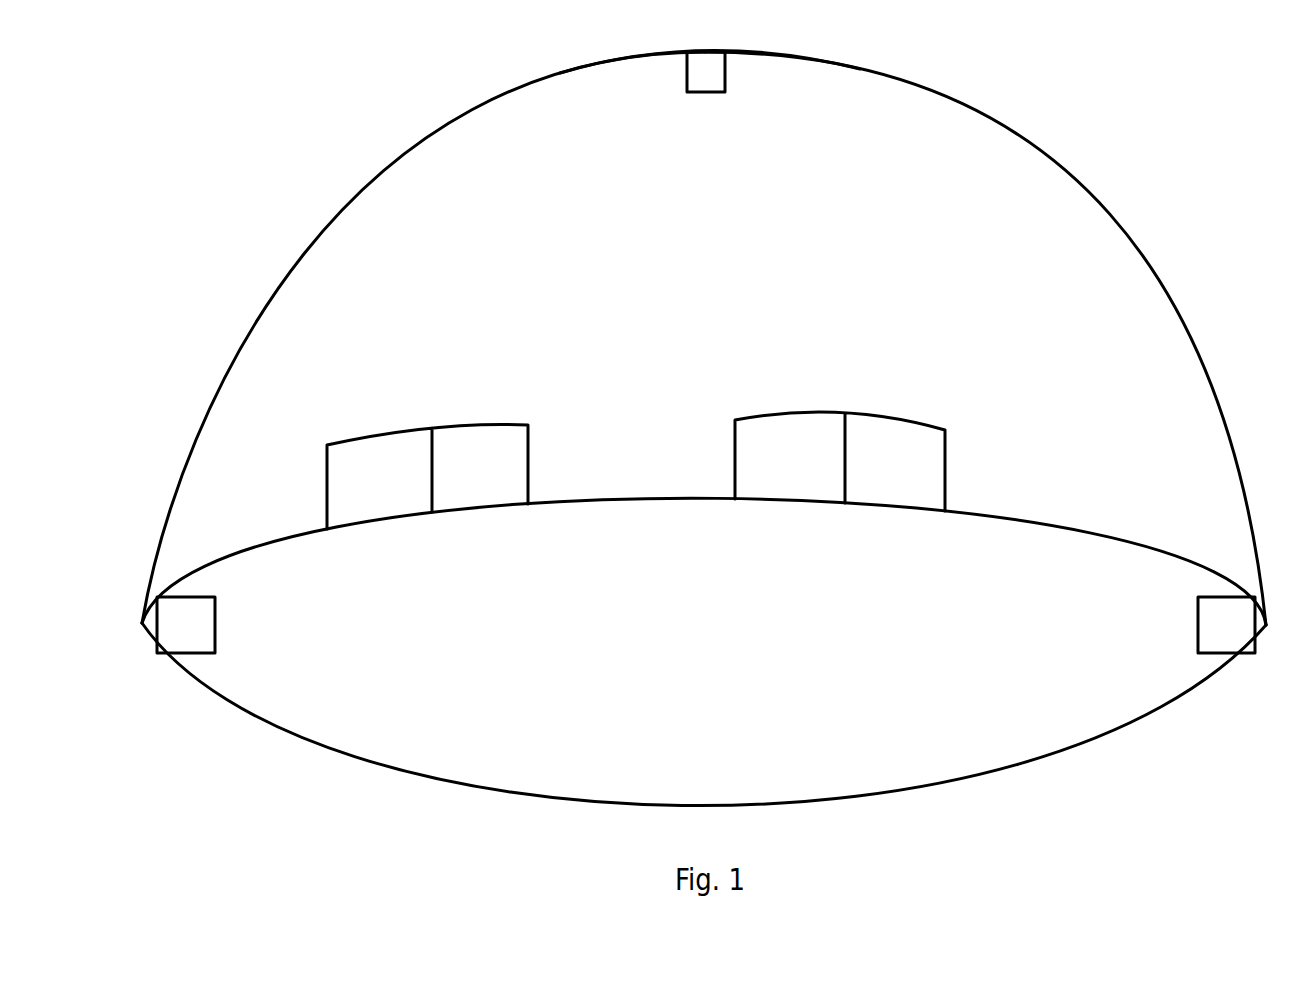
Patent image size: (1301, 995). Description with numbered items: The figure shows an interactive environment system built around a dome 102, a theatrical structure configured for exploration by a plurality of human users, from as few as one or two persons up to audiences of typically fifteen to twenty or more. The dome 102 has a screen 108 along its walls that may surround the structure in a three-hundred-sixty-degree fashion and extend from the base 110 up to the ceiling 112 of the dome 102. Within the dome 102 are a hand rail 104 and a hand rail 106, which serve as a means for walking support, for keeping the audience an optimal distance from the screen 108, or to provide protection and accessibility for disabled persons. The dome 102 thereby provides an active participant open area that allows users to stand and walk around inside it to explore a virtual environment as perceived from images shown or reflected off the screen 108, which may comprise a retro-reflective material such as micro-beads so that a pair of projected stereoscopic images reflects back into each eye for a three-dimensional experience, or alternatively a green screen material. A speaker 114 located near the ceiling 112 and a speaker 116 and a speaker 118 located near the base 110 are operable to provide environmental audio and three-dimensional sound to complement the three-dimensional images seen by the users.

The dome 102 is at (719, 338).
The hand rail 104 is at (397, 428).
The hand rail 106 is at (762, 412).
The screen 108 is at (1093, 250).
The base 110 is at (1048, 673).
The ceiling 112 is at (820, 83).
The speaker 114 is at (683, 75).
The speaker 116 is at (215, 622).
The speaker 118 is at (1198, 627).